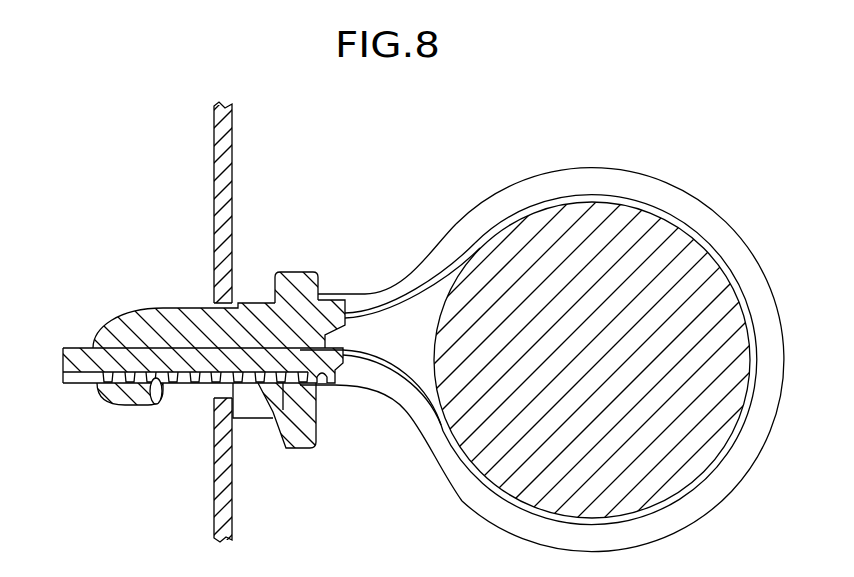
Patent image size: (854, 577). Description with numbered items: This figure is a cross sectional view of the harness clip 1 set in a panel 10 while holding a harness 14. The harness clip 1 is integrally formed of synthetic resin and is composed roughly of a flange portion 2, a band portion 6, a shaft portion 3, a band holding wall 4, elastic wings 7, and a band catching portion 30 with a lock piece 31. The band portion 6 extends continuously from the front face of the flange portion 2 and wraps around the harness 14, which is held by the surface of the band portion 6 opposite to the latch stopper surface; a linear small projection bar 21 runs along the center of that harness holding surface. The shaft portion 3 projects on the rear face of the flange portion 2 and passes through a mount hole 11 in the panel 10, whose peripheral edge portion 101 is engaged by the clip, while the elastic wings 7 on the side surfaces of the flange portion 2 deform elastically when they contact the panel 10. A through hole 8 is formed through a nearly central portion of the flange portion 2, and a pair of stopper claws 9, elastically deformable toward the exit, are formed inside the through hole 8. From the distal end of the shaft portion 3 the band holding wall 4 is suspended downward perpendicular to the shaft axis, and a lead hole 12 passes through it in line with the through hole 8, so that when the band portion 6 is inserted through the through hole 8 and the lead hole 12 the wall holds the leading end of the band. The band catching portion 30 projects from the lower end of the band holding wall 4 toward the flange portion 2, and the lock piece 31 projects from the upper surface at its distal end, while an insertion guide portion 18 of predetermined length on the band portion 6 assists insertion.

The harness clip 1 is at (466, 160).
The flange portion 2 is at (300, 272).
The shaft portion 3 is at (427, 288).
The band holding wall 4 is at (427, 288).
The band portion 6 is at (542, 360).
The elastic wings 7 is at (247, 418).
The through hole 8 is at (334, 384).
The stopper claws 9 is at (258, 380).
The panel 10 is at (227, 140).
The mount hole 11 is at (218, 384).
The lead hole 12 is at (427, 288).
The harness 14 is at (620, 210).
The insertion guide portion 18 is at (73, 392).
The small projection bar 21 is at (447, 437).
The band catching portion 30 is at (123, 407).
The lock piece 31 is at (155, 406).
The peripheral edge portion 101 is at (236, 280).